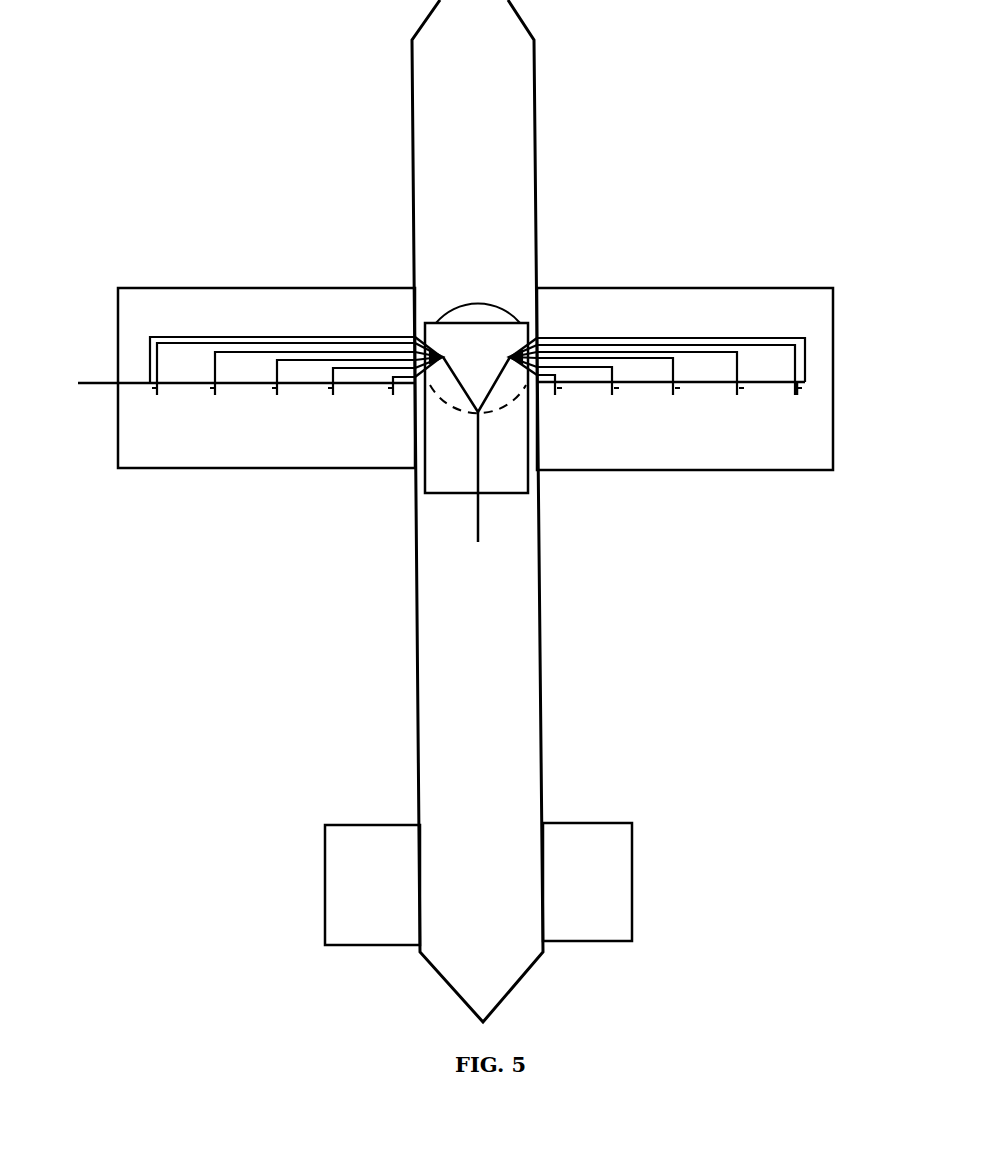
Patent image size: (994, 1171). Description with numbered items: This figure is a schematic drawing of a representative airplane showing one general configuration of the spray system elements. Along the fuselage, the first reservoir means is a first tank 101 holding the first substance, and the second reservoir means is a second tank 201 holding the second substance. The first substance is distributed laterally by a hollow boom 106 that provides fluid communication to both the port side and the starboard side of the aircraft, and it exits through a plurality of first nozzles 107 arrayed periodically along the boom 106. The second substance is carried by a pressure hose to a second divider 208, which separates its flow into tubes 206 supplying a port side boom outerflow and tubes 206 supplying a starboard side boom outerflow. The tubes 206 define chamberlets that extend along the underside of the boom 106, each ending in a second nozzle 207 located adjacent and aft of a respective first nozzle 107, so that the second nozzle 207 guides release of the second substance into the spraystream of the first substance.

The first tank 101 is at (472, 313).
The second tank 201 is at (486, 343).
The second divider 208 is at (478, 412).
The hollow boom 106 is at (152, 358).
The first nozzles 107 is at (229, 385).
The tubes 206 is at (777, 338).
The second nozzles 207 is at (797, 395).